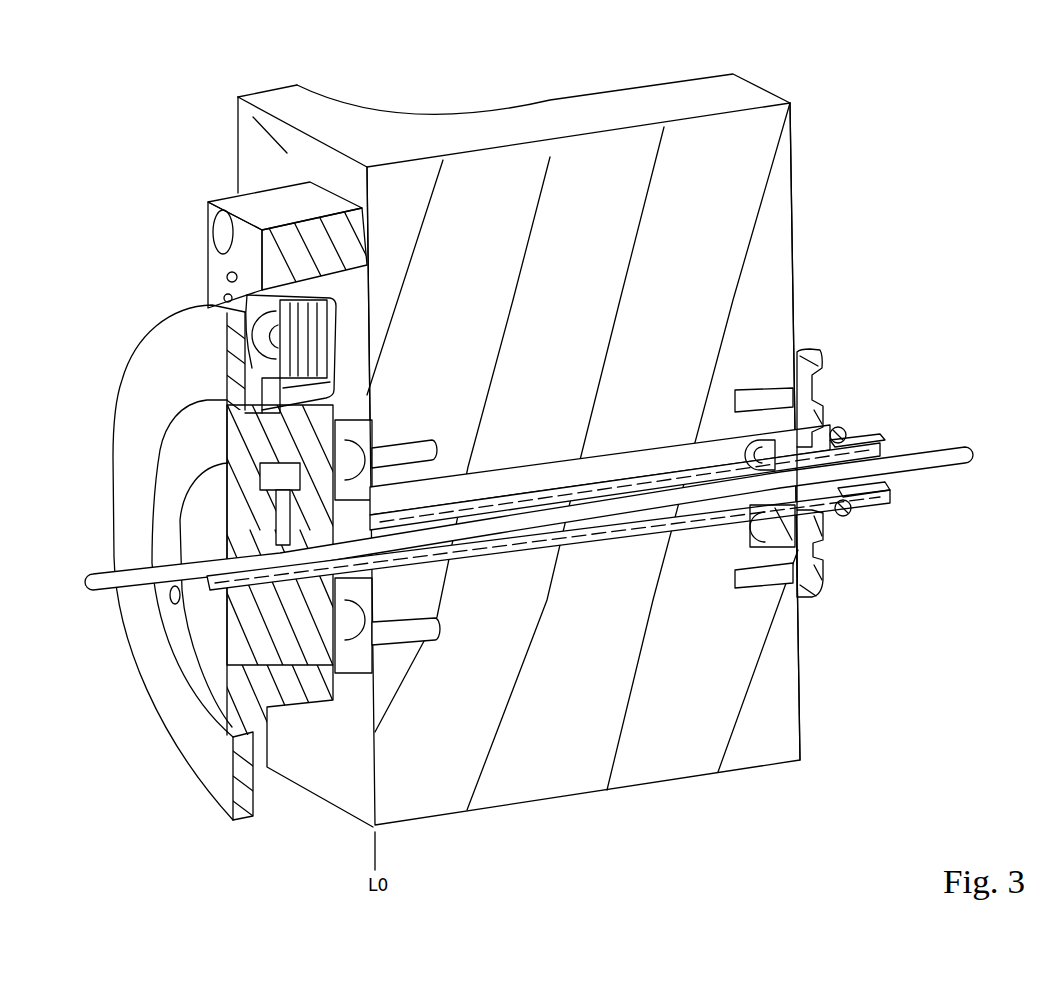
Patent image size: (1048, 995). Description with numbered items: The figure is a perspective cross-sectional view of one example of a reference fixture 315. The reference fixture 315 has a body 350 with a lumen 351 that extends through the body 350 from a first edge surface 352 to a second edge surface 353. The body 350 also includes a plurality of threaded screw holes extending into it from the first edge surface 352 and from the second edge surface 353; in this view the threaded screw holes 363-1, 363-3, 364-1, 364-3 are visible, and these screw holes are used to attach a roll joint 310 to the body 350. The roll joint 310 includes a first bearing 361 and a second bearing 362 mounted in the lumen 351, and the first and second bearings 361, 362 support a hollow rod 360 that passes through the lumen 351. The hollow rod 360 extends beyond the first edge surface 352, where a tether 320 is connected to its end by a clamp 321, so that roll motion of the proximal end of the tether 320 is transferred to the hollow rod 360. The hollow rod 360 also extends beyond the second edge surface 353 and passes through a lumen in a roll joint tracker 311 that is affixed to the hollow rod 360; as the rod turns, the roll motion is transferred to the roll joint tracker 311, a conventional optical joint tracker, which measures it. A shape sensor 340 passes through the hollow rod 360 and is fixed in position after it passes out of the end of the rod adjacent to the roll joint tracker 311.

The roll joint 310 is at (884, 545).
The roll joint tracker 311 is at (227, 497).
The reference fixture 315 is at (514, 68).
The tether 320 is at (842, 442).
The clamp 321 is at (889, 489).
The shape sensor 340 is at (529, 464).
The body 350 is at (577, 430).
The lumen 351 is at (625, 447).
The first edge surface 352 is at (848, 425).
The second edge surface 353 is at (226, 114).
The hollow rod 360 is at (548, 569).
The first bearing 361 is at (423, 546).
The second bearing 362 is at (732, 532).
The threaded screw hole 363-1 is at (415, 402).
The threaded screw hole 363-3 is at (416, 677).
The threaded screw hole 364-1 is at (764, 350).
The threaded screw hole 364-3 is at (744, 612).